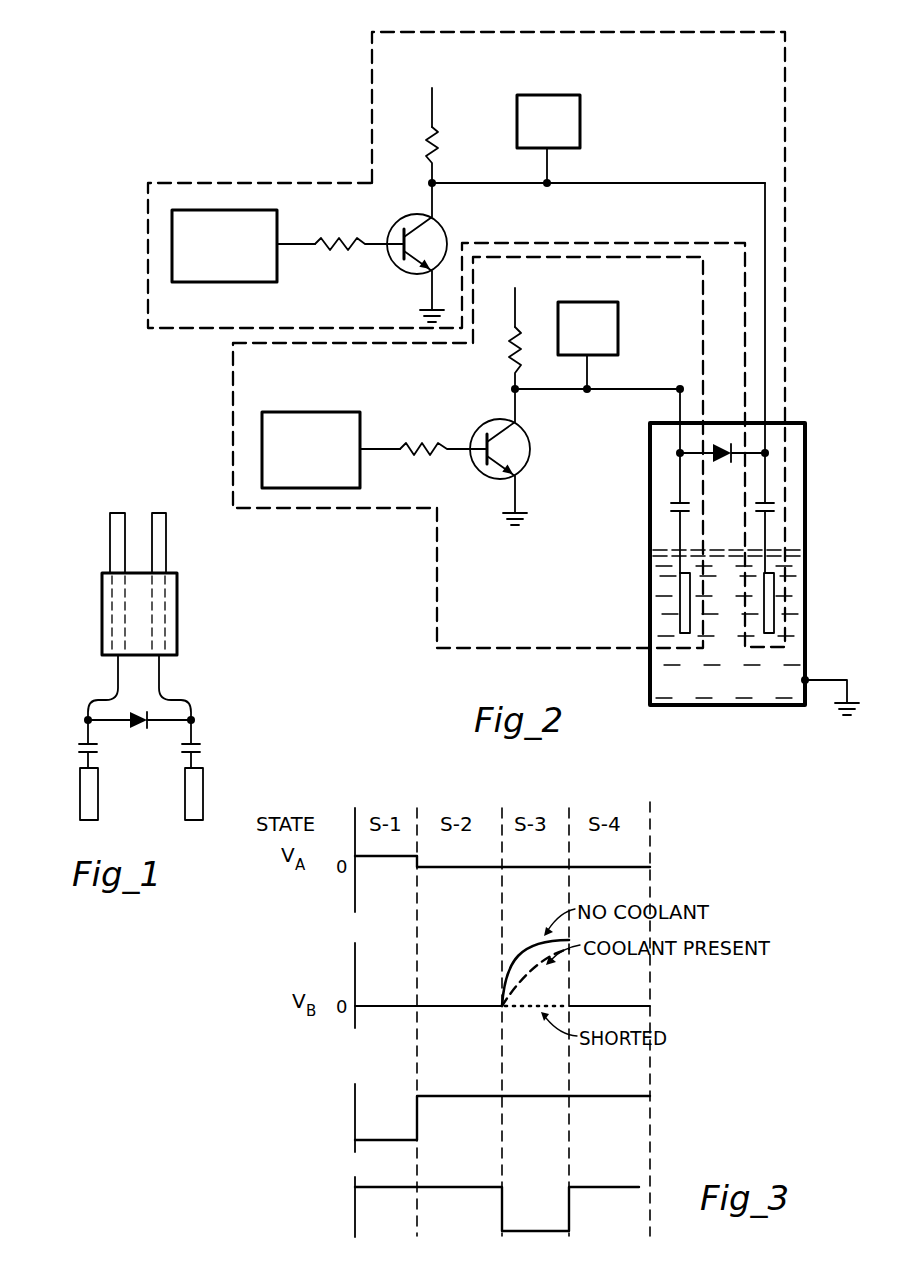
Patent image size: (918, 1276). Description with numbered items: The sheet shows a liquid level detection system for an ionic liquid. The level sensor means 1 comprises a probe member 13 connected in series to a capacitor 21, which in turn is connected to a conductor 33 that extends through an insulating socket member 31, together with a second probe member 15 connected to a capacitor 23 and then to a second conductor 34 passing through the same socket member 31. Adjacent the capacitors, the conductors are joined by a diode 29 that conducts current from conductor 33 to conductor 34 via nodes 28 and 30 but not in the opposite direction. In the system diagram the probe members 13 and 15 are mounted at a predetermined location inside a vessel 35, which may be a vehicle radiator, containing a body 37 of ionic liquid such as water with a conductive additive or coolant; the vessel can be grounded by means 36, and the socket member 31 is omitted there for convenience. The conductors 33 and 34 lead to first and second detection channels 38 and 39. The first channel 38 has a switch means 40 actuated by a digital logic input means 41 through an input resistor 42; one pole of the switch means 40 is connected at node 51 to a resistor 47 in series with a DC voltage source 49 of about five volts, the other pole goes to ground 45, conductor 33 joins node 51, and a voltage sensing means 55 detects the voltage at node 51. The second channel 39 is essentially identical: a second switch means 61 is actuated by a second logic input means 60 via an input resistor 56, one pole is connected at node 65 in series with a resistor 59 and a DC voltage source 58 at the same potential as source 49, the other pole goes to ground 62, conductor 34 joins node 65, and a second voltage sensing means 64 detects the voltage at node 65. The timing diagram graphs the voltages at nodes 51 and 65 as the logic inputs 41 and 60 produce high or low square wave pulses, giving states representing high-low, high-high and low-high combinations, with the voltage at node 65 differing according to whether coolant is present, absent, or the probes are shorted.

In FIG. 1, the level sensor means 1 is at (143, 663).
In FIG. 1, the probe member 13 is at (80, 802).
In FIG. 2, the probe member 13 is at (680, 600).
In FIG. 1, the second probe member 15 is at (203, 802).
In FIG. 2, the second probe member 15 is at (774, 604).
In FIG. 1, the capacitor 21 is at (80, 747).
In FIG. 2, the capacitor 21 is at (670, 508).
In FIG. 1, the capacitor 23 is at (200, 748).
In FIG. 2, the capacitor 23 is at (778, 508).
In FIG. 1, the node 28 is at (88, 716).
In FIG. 2, the node 28 is at (676, 453).
In FIG. 1, the diode 29 is at (140, 711).
In FIG. 2, the diode 29 is at (722, 438).
In FIG. 1, the node 30 is at (191, 716).
In FIG. 2, the node 30 is at (805, 453).
In FIG. 1, the insulating socket member 31 is at (102, 608).
In FIG. 1, the conductor 33 is at (110, 522).
In FIG. 2, the conductor 33 is at (650, 391).
In FIG. 1, the second conductor 34 is at (166, 522).
In FIG. 2, the second conductor 34 is at (765, 218).
In FIG. 2, the vessel 35 is at (808, 580).
In FIG. 2, the grounding means 36 is at (850, 706).
In FIG. 2, the body of ionic liquid 37 is at (722, 636).
In FIG. 2, the first detection channel 38 is at (482, 631).
In FIG. 2, the second detection channel 39 is at (772, 61).
In FIG. 2, the first switch means 40 is at (474, 476).
In FIG. 2, the digital logic input means 41 is at (318, 412).
In FIG. 3, the digital logic input means 41 is at (418, 1118).
In FIG. 2, the input resistor 42 is at (418, 452).
In FIG. 2, the ground 45 is at (508, 520).
In FIG. 2, the resistor 47 is at (522, 365).
In FIG. 2, the DC voltage source 49 is at (518, 292).
In FIG. 2, the node 51 is at (508, 390).
In FIG. 2, the voltage sensing means 55 is at (600, 302).
In FIG. 2, the input resistor 56 is at (333, 238).
In FIG. 2, the DC voltage source 58 is at (433, 94).
In FIG. 2, the resistor 59 is at (440, 150).
In FIG. 2, the second digital logic input means 60 is at (243, 282).
In FIG. 3, the second digital logic input means 60 is at (416, 1208).
In FIG. 2, the second switch means 61 is at (388, 228).
In FIG. 2, the ground 62 is at (420, 308).
In FIG. 2, the second voltage sensing means 64 is at (580, 118).
In FIG. 2, the node 65 is at (428, 184).